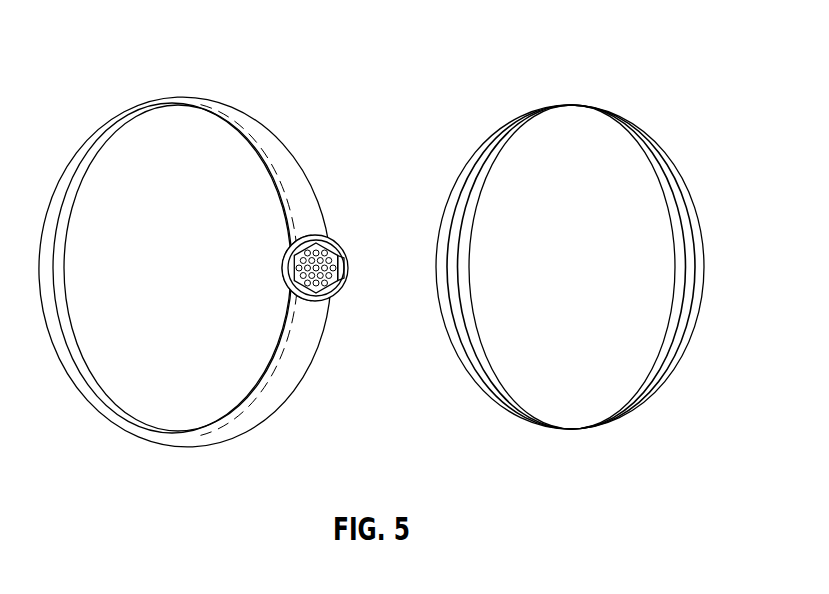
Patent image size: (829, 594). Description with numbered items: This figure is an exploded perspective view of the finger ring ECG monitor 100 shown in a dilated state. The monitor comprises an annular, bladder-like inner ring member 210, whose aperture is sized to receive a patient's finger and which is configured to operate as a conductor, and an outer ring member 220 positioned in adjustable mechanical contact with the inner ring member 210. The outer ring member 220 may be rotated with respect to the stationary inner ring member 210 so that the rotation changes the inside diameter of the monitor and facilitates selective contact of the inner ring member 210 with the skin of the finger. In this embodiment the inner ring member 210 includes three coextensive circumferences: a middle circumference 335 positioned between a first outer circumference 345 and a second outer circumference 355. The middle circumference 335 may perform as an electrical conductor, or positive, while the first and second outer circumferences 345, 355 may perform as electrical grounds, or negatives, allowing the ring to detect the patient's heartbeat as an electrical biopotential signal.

The finger ring ECG monitor 100 is at (368, 52).
The outer ring member 220 is at (243, 113).
The inner ring member 210 is at (586, 88).
The middle circumference 335 is at (652, 143).
The first outer circumference 345 is at (477, 347).
The second outer circumference 355 is at (477, 392).